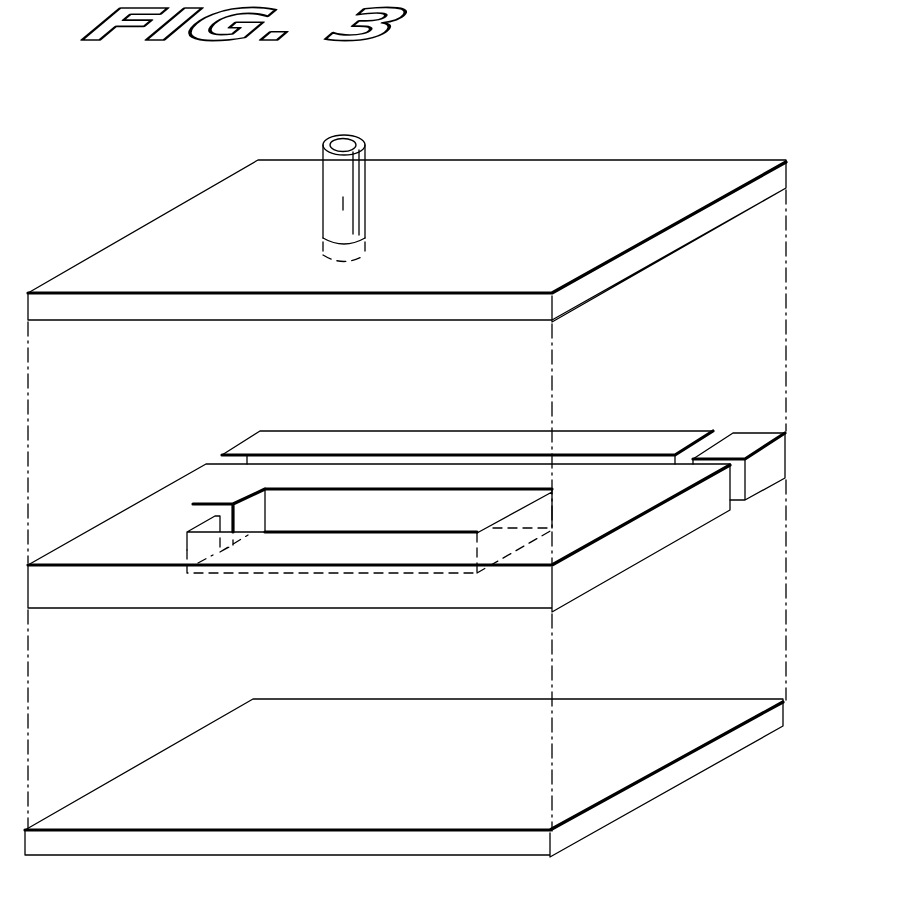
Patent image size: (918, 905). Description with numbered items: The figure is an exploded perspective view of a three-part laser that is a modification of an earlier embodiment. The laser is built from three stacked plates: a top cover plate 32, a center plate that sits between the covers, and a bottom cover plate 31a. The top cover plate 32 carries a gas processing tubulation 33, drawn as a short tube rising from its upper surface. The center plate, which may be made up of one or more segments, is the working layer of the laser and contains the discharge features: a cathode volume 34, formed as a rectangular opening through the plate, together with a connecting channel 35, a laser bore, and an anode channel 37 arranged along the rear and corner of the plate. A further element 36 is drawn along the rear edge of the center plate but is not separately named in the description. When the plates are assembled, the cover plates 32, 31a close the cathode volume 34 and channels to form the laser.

The bottom cover plate 31a is at (680, 768).
The top cover plate 32 is at (612, 180).
The gas processing tubulation 33 is at (353, 172).
The cathode volume 34 is at (385, 508).
The connecting channel 35 is at (218, 485).
The rear bar 36 is at (600, 458).
The anode channel 37 is at (722, 437).